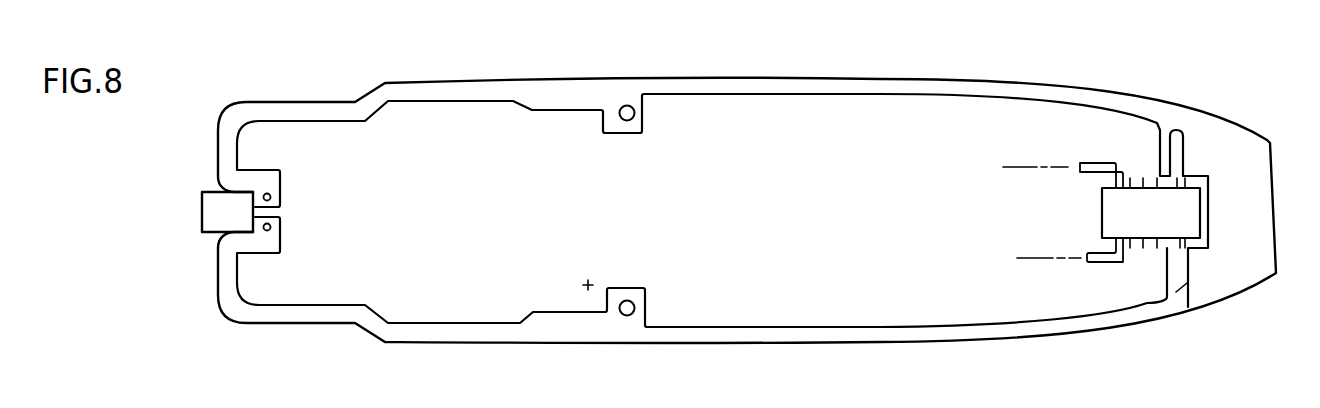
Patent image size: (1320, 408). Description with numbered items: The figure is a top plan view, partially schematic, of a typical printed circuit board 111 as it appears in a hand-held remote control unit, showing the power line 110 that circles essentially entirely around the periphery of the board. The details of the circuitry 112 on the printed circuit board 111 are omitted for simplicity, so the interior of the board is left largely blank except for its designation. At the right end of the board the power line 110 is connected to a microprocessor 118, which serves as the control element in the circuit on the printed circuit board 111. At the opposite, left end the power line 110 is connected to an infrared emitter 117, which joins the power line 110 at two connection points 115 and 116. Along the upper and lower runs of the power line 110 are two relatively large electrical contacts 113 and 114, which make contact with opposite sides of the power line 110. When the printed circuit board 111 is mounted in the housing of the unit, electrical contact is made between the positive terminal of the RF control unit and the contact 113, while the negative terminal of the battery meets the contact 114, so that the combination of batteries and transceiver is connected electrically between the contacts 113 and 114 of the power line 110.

The power line 110 is at (413, 90).
The printed circuit board 111 is at (220, 326).
The circuitry 112 is at (453, 220).
The electrical contact 113 is at (635, 117).
The electrical contact 114 is at (642, 307).
The connection point 115 is at (272, 197).
The connection point 116 is at (272, 229).
The infrared emitter 117 is at (212, 210).
The microprocessor 118 is at (1143, 203).